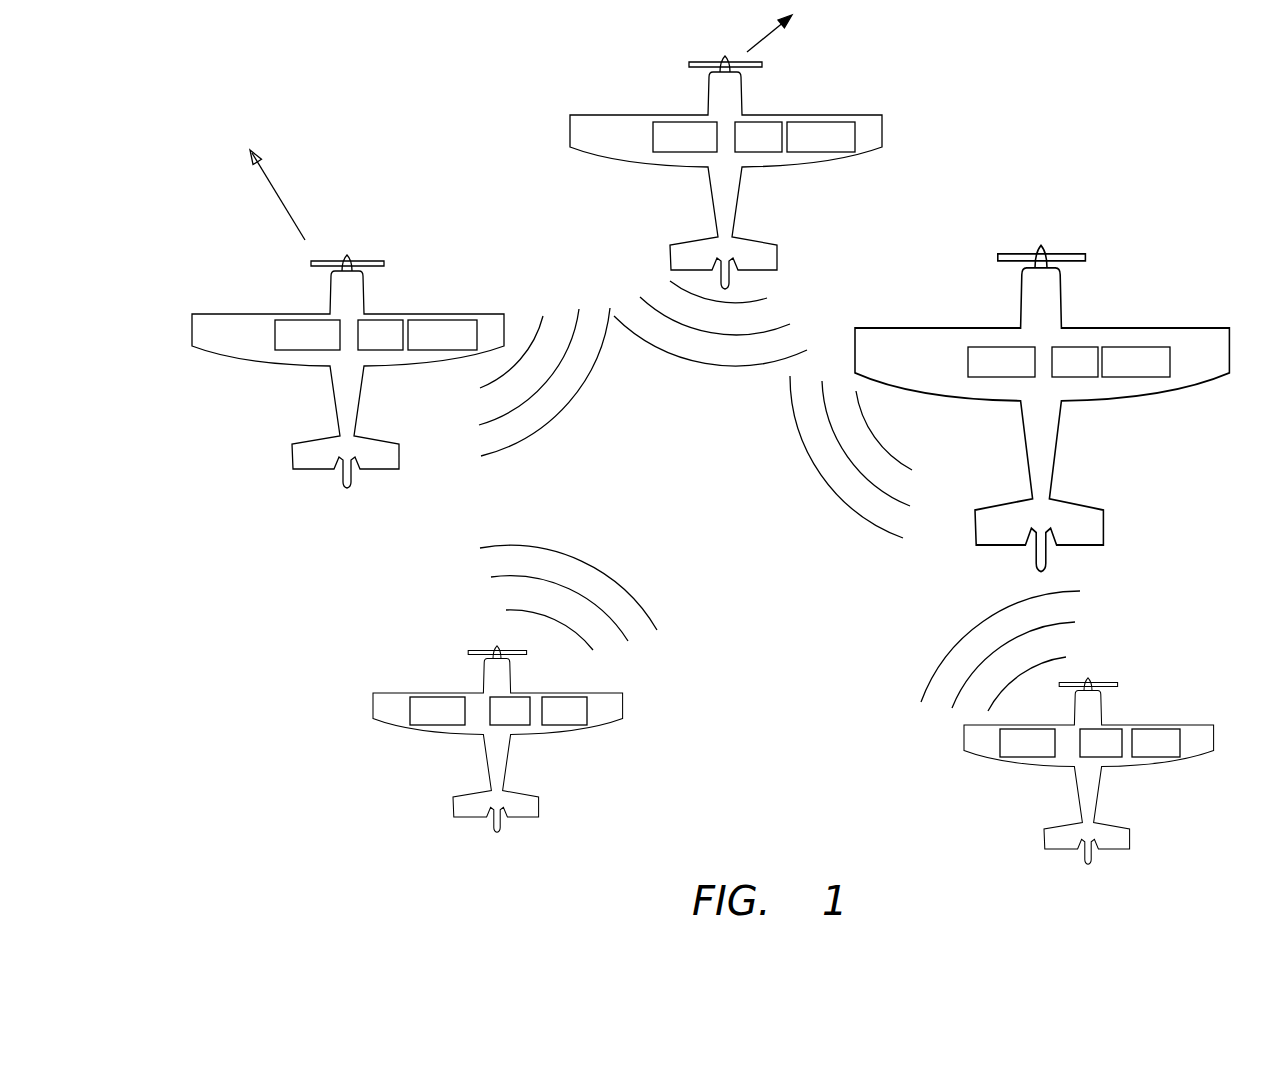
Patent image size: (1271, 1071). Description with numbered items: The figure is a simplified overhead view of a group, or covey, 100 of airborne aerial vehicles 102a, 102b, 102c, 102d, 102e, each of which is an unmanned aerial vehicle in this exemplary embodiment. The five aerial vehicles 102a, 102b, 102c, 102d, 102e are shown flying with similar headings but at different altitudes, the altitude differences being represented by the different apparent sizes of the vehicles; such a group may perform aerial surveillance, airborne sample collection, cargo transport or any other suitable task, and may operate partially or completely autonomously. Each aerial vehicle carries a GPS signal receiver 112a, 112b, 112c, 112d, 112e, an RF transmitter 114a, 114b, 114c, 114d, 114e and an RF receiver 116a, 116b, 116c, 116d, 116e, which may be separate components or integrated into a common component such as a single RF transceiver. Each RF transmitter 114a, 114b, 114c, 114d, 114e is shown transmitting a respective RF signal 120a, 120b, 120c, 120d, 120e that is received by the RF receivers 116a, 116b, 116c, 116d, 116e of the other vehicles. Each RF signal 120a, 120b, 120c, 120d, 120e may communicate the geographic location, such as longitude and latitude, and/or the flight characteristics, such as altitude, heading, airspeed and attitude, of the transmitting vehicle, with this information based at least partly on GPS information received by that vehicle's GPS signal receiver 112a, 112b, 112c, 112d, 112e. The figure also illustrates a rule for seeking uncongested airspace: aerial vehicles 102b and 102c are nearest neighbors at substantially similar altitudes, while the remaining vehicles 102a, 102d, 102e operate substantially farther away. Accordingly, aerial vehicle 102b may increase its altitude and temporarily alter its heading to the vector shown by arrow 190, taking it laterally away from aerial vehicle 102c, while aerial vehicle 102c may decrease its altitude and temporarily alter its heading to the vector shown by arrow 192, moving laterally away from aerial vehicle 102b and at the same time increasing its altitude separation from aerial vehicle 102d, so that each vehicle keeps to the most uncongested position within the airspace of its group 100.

The group of airborne aerial vehicles 100 is at (1093, 97).
The aerial vehicle 102a is at (487, 757).
The aerial vehicle 102b is at (334, 390).
The aerial vehicle 102c is at (712, 192).
The aerial vehicle 102d is at (1025, 448).
The aerial vehicle 102e is at (1097, 797).
The GPS signal receiver 112a is at (445, 697).
The GPS signal receiver 112b is at (298, 320).
The GPS signal receiver 112c is at (678, 120).
The GPS signal receiver 112d is at (997, 345).
The GPS signal receiver 112e is at (1030, 757).
The RF transmitter 114a is at (515, 727).
The RF transmitter 114b is at (390, 320).
The RF transmitter 114c is at (750, 120).
The RF transmitter 114d is at (1083, 345).
The RF transmitter 114e is at (1103, 758).
The RF receiver 116a is at (590, 712).
The RF receiver 116b is at (443, 352).
The RF receiver 116c is at (825, 152).
The RF receiver 116d is at (1145, 377).
The RF receiver 116e is at (1165, 728).
The RF signal 120a is at (628, 587).
The RF signal 120b is at (557, 423).
The RF signal 120c is at (700, 370).
The RF signal 120d is at (805, 455).
The RF signal 120e is at (945, 655).
The arrow 190 is at (277, 190).
The arrow 192 is at (765, 37).